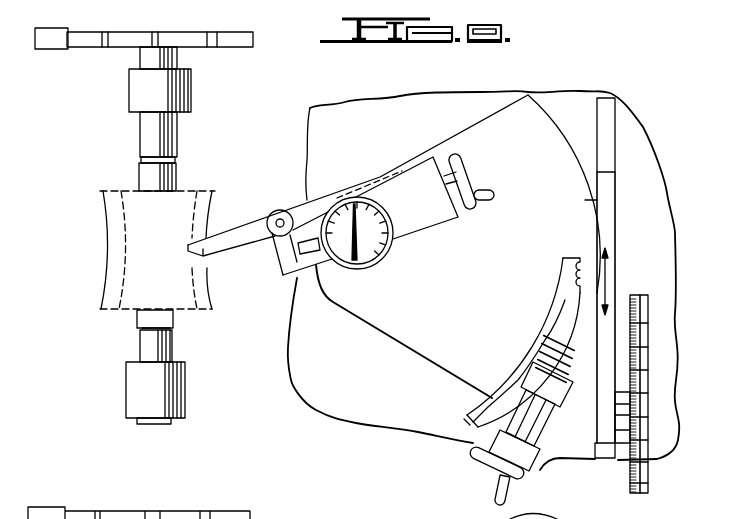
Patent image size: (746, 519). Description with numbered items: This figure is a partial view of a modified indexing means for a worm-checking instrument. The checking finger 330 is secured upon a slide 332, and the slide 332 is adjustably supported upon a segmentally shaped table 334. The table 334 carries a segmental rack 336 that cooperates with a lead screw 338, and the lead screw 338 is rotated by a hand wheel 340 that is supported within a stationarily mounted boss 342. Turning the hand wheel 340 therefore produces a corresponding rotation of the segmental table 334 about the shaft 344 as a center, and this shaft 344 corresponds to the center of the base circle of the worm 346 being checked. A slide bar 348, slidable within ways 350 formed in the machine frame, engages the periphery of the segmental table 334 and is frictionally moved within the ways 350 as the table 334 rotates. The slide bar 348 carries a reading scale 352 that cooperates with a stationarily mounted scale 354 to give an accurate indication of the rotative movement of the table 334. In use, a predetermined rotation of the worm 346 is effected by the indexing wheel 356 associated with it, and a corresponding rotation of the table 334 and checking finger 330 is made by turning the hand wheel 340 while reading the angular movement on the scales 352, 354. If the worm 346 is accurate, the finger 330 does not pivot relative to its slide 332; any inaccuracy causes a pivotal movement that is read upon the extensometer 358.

The checking finger 330 is at (228, 237).
The slide 332 is at (328, 196).
The segmentally shaped table 334 is at (507, 113).
The segmental rack 336 is at (557, 303).
The lead screw 338 is at (543, 362).
The hand wheel 340 is at (502, 483).
The stationarily mounted boss 342 is at (545, 462).
The shaft 344 is at (386, 258).
The worm 346 is at (106, 255).
The slide bar 348 is at (610, 222).
The ways 350 is at (608, 148).
The reading scale 352 is at (627, 435).
The stationarily mounted scale 354 is at (644, 283).
The indexing wheel 356 is at (95, 48).
The extensometer 358 is at (392, 240).